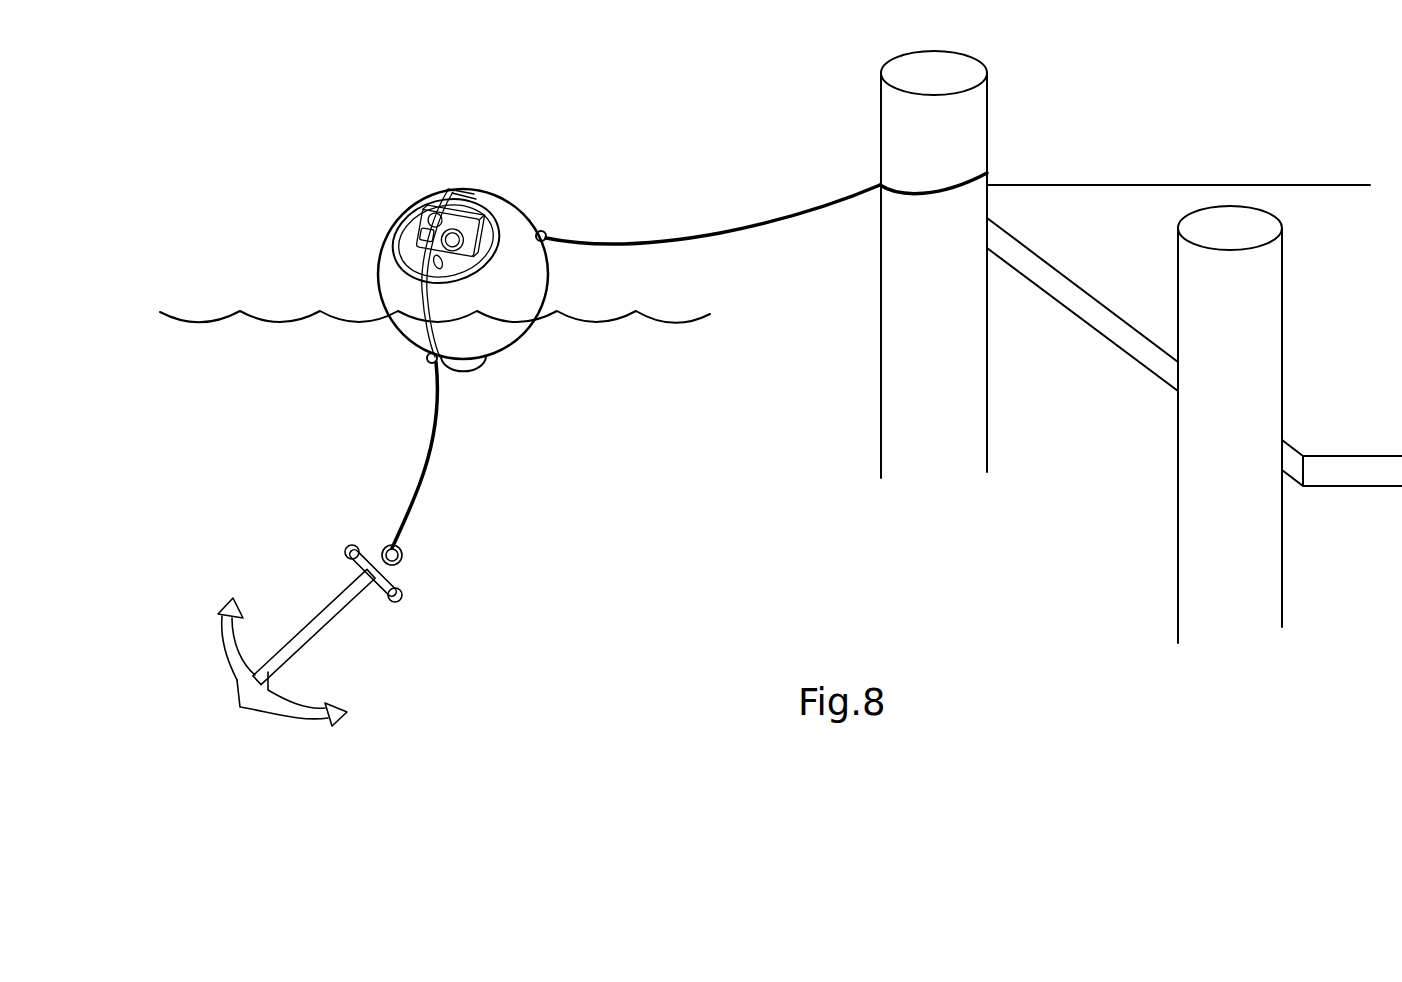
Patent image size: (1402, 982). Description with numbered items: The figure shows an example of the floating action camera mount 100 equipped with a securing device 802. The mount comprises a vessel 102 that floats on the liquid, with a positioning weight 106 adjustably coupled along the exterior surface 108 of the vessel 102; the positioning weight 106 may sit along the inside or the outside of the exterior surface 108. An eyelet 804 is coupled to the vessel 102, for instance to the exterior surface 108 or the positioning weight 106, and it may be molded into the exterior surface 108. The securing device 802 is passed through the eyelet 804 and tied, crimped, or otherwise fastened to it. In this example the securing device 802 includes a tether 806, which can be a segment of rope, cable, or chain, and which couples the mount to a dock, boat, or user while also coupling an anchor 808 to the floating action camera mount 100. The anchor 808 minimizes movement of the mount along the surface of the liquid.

The floating action camera mount 100 is at (293, 137).
The vessel 102 is at (453, 188).
The positioning weight 106 is at (475, 372).
The exterior surface 108 is at (510, 200).
The securing device 802 is at (640, 327).
The eyelet 804 is at (545, 232).
The tether 806 is at (650, 243).
The anchor 808 is at (240, 683).